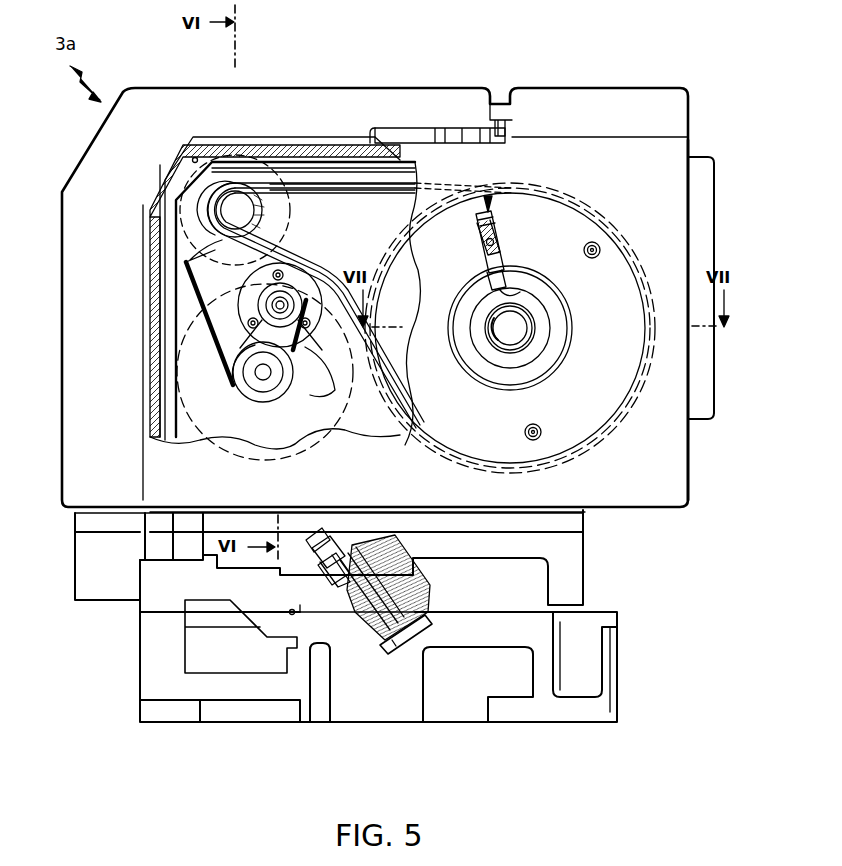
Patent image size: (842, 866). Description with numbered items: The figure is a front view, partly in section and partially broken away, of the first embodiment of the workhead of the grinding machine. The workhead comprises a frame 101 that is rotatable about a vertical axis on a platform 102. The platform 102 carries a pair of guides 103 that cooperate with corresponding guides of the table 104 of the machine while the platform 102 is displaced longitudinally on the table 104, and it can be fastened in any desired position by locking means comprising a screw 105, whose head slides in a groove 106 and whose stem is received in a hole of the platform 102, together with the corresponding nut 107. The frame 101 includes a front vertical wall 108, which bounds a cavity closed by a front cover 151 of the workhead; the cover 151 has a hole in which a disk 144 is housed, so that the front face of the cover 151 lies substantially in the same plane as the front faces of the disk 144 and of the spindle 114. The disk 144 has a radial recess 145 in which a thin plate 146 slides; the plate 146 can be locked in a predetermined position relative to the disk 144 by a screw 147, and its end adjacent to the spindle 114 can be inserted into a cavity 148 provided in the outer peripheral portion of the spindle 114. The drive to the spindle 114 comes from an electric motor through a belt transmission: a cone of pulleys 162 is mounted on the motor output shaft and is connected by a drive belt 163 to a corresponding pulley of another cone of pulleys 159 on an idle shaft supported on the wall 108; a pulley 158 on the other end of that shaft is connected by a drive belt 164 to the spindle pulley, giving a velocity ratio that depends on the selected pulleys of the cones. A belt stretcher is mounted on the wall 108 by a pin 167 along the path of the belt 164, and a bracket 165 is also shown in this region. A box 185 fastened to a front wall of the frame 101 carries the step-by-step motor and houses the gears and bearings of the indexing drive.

The frame 101 is at (152, 308).
The platform 102 is at (575, 572).
The guides 103 is at (153, 615).
The table 104 is at (607, 688).
The screw 105 is at (372, 618).
The groove 106 is at (422, 626).
The nut 107 is at (310, 582).
The vertical wall 108 is at (328, 152).
The spindle 114 is at (528, 352).
The disk 144 is at (556, 212).
The radial recess 145 is at (480, 195).
The thin plate 146 is at (497, 265).
The screw 147 is at (493, 242).
The cavity 148 is at (508, 288).
The front cover 151 is at (663, 195).
The pulley 158 is at (220, 210).
The cone of pulleys 159 is at (178, 275).
The cone of pulleys 162 is at (345, 392).
The drive belt 163 is at (255, 265).
The drive belt 164 is at (345, 190).
The bracket 165 is at (320, 388).
The pin 167 is at (300, 295).
The box 185 is at (705, 232).